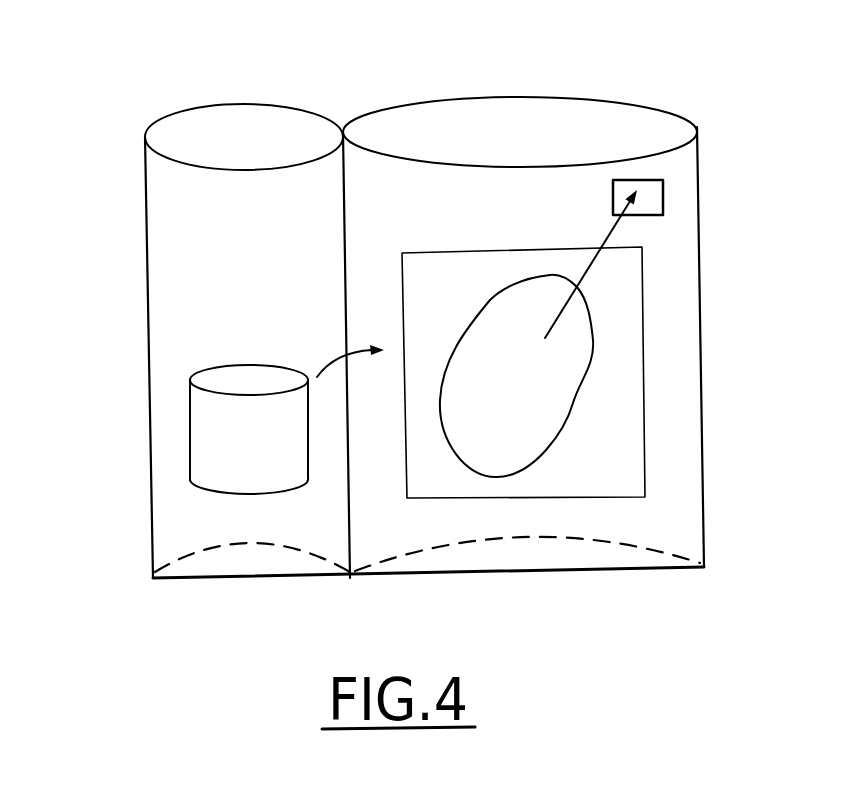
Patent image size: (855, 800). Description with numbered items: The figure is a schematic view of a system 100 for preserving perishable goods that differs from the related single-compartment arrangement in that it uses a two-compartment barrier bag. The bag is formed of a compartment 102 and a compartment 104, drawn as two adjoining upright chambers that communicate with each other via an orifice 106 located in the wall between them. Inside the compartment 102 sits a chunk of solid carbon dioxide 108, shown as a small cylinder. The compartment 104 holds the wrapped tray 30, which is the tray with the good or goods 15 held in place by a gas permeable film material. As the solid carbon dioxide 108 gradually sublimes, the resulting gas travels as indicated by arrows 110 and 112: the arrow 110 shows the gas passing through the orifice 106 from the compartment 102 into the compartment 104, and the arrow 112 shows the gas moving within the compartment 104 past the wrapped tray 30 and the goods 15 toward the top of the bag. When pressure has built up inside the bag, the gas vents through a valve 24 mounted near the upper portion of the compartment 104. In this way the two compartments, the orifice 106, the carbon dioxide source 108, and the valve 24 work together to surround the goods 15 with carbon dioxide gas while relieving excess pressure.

The analysis system 100 is at (355, 74).
The compartment 102 is at (168, 193).
The compartment 104 is at (672, 478).
The orifice 106 is at (307, 341).
The solid carbon dioxide 108 is at (208, 450).
The arrow 110 is at (348, 350).
The arrow 112 is at (600, 240).
The goods 15 is at (558, 428).
The valve 24 is at (640, 202).
The wrapped tray 30 is at (516, 343).